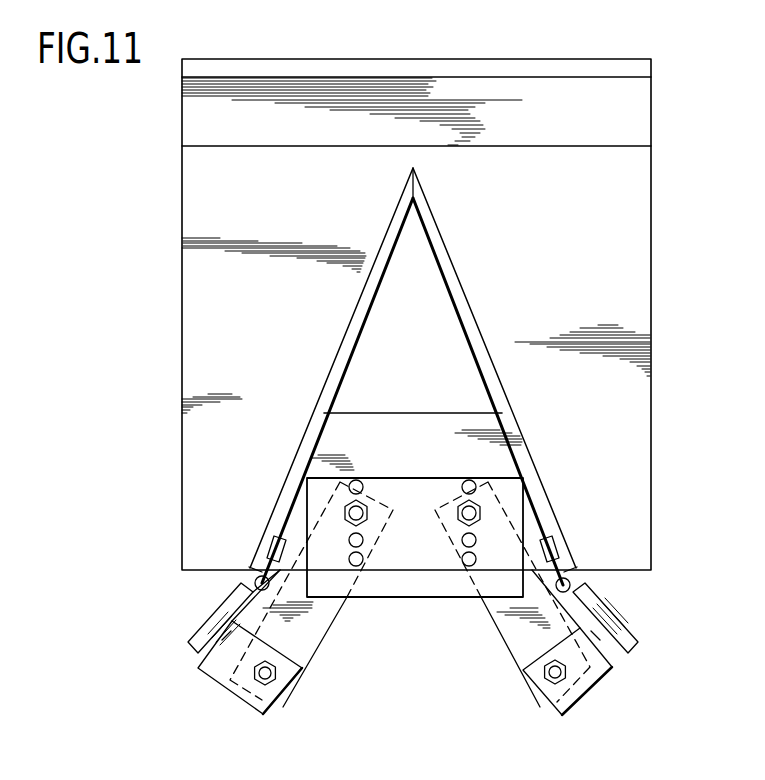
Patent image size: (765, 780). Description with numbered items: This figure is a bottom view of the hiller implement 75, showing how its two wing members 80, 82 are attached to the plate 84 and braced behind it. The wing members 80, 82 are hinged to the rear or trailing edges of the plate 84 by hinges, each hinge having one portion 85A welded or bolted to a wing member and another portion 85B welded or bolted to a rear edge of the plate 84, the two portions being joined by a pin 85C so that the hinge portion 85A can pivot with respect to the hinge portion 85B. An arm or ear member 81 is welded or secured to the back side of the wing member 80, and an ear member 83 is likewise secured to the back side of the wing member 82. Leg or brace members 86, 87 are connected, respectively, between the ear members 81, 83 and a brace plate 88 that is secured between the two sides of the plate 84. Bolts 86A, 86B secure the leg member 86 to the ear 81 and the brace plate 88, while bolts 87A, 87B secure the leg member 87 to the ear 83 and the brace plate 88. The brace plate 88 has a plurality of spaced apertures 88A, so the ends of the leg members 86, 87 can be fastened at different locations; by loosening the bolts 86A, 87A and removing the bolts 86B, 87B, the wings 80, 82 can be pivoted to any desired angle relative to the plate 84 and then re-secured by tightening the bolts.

The hiller implement 75 is at (541, 43).
The plate 84 is at (491, 349).
The brace plate 88 is at (445, 598).
The spaced apertures 88A is at (464, 481).
The bolt 87B is at (345, 505).
The bolt 86B is at (482, 508).
The leg member 87 is at (328, 625).
The leg member 86 is at (505, 622).
The hinge portion 85B is at (278, 540).
The pin 85C is at (254, 581).
The hinge portion 85A is at (222, 640).
The wing member 82 is at (205, 617).
The wing member 80 is at (640, 628).
The ear member 83 is at (235, 705).
The ear member 81 is at (606, 676).
The bolt 87A is at (282, 680).
The bolt 86A is at (550, 680).